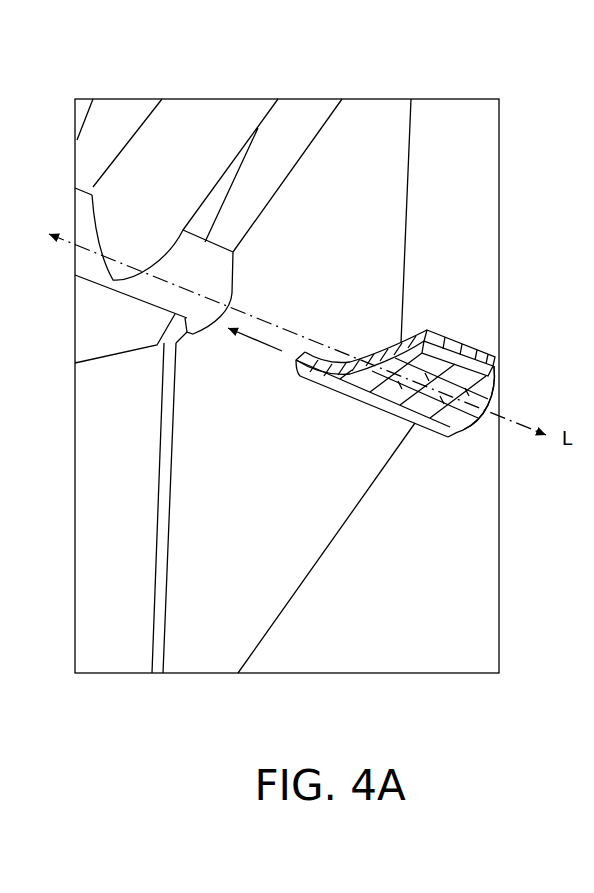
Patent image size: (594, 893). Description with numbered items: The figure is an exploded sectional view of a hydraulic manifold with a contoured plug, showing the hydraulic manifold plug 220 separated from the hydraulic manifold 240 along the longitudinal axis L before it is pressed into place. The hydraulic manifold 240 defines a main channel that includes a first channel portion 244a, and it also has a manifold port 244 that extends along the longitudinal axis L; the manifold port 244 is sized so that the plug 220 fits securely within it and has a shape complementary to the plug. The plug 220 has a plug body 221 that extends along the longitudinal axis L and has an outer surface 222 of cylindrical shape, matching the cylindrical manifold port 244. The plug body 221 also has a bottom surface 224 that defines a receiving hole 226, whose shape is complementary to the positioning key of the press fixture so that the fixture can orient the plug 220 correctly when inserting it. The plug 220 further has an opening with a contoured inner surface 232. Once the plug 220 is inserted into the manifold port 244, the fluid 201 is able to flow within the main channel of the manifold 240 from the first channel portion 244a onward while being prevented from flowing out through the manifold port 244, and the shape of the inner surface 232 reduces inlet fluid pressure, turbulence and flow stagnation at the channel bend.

The fluid 201 is at (202, 128).
The hydraulic manifold plug 220 is at (441, 391).
The plug body 221 is at (496, 393).
The outer surface 222 is at (428, 421).
The bottom surface 224 is at (458, 424).
The receiving hole 226 is at (480, 367).
The inner surface 232 is at (387, 347).
The hydraulic manifold 240 is at (407, 203).
The manifold port 244 is at (205, 278).
The first channel portion 244a is at (232, 122).